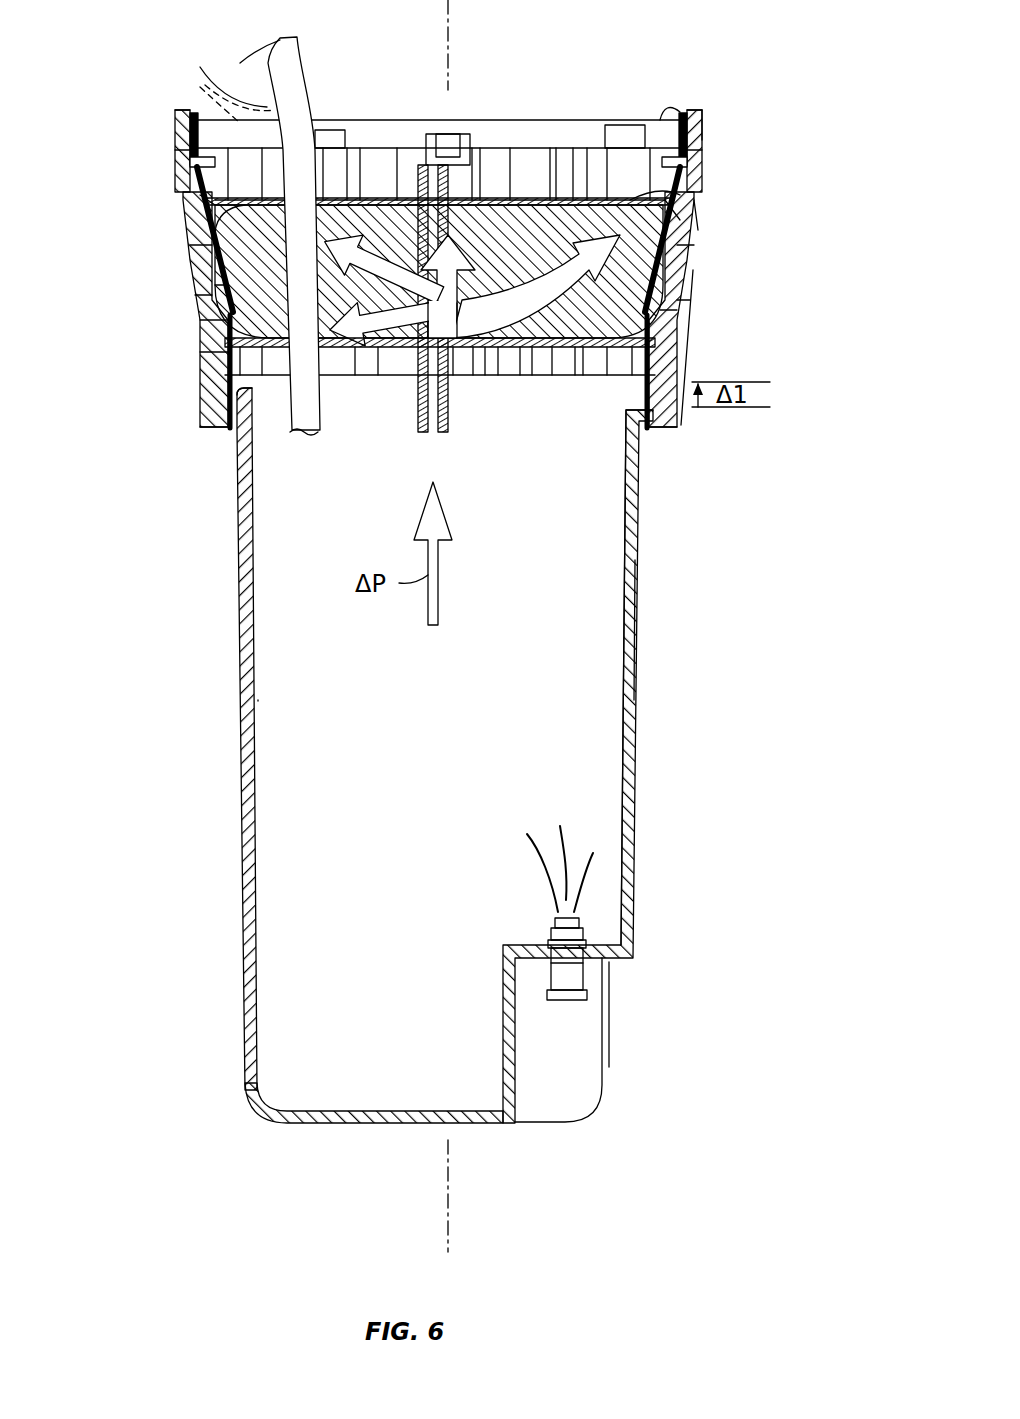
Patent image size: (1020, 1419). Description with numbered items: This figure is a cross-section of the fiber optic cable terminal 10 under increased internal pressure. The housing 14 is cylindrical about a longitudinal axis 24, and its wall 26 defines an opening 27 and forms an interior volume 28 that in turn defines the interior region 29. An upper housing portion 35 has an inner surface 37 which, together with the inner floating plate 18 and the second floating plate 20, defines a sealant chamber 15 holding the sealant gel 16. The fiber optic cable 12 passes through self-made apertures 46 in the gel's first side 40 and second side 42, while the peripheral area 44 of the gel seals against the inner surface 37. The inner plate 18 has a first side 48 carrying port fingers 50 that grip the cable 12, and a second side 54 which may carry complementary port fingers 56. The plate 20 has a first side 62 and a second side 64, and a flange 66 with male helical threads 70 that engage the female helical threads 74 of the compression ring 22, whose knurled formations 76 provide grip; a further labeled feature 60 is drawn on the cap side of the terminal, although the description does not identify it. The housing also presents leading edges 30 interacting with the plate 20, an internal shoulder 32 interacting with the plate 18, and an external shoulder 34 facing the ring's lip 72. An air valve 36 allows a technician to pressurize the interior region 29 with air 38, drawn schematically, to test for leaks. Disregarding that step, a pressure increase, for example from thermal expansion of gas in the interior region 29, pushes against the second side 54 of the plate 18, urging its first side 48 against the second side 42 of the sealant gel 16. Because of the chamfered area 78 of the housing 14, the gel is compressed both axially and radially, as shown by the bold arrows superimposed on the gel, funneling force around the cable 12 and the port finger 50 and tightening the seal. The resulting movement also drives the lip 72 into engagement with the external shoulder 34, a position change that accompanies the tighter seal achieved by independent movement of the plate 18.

The fiber optic cable terminal 10 is at (768, 106).
The fiber optic cable 12 is at (250, 58).
The housing 14 is at (655, 507).
The sealant chamber 15 is at (545, 242).
The sealant gel 16 is at (608, 300).
The inner floating plate 18 is at (640, 346).
The floating plate 20 is at (652, 120).
The compression ring 22 is at (190, 393).
The longitudinal axis 24 is at (452, 46).
The wall 26 is at (640, 620).
The opening 27 is at (240, 116).
The interior volume 28 is at (532, 158).
The interior region 29 is at (586, 494).
The leading edges 30 is at (694, 148).
The internal shoulder 32 is at (628, 405).
The external shoulder 34 is at (681, 426).
The upper housing portion 35 is at (703, 224).
The air valve 36 is at (588, 968).
The inner surface 37 is at (222, 285).
The air 38 is at (586, 892).
The first side of sealant gel 40 is at (215, 212).
The second side of sealant gel 42 is at (678, 312).
The peripheral area 44 is at (205, 247).
The self-made apertures 46 is at (205, 218).
The first side of inner plate 48 is at (495, 362).
The port fingers 50 is at (208, 296).
The second side of inner plate 54 is at (215, 352).
The complementary port fingers 56 is at (322, 382).
The skirt surface 60 is at (213, 318).
The first side of plate 62 is at (642, 196).
The second side of plate 64 is at (668, 220).
The flange 66 is at (698, 112).
The helical threads 70 is at (180, 150).
The lip 72 is at (222, 430).
The helical threads 74 is at (180, 110).
The knurled formations 76 is at (683, 303).
The chamfered area 78 is at (692, 245).